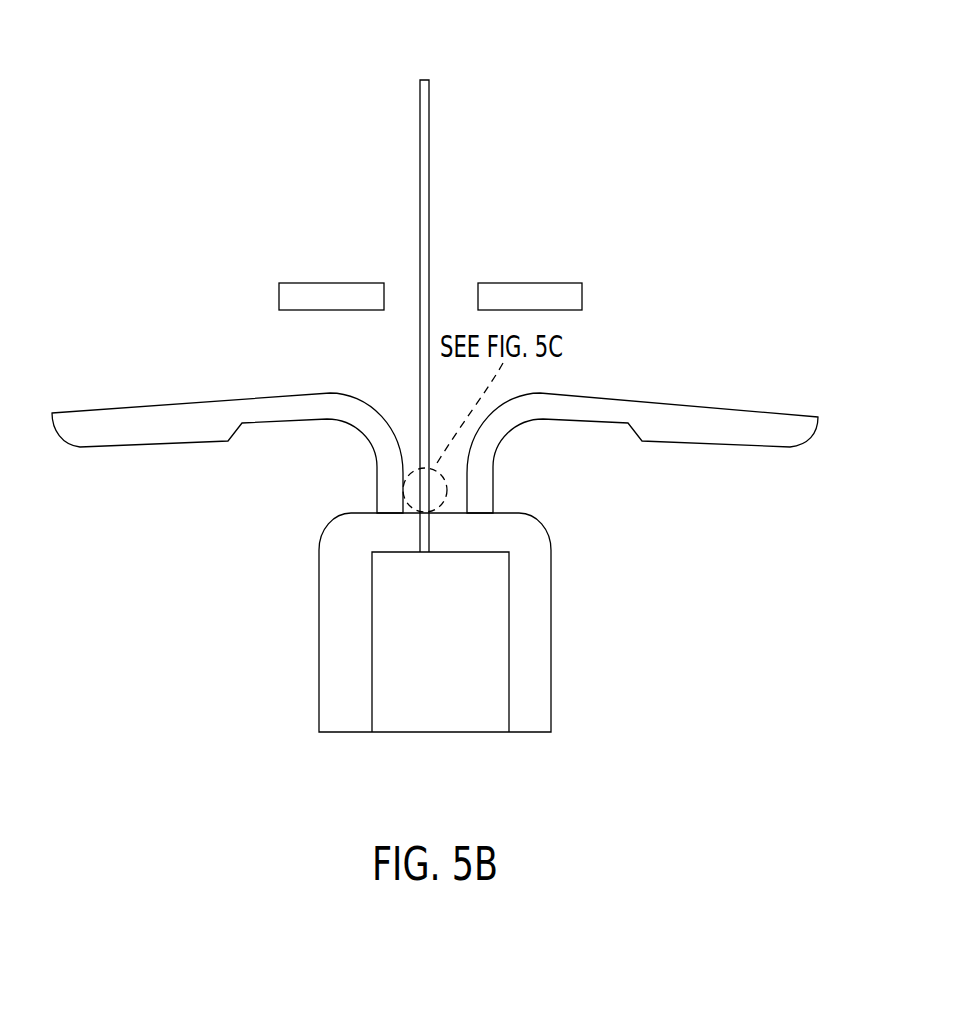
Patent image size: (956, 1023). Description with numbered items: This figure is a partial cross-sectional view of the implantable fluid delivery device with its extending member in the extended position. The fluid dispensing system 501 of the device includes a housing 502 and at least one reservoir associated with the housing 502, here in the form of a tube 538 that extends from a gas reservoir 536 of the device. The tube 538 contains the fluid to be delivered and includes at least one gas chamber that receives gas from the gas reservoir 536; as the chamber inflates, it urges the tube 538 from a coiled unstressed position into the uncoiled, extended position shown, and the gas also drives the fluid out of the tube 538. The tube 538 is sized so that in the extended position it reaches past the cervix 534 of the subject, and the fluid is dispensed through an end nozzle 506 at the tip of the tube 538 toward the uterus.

The fluid dispensing system 501 is at (597, 361).
The housing 502 is at (540, 618).
The end nozzle 506 is at (424, 82).
The cervix 534 is at (328, 283).
The gas reservoir 536 is at (426, 682).
The tube 538 is at (430, 97).